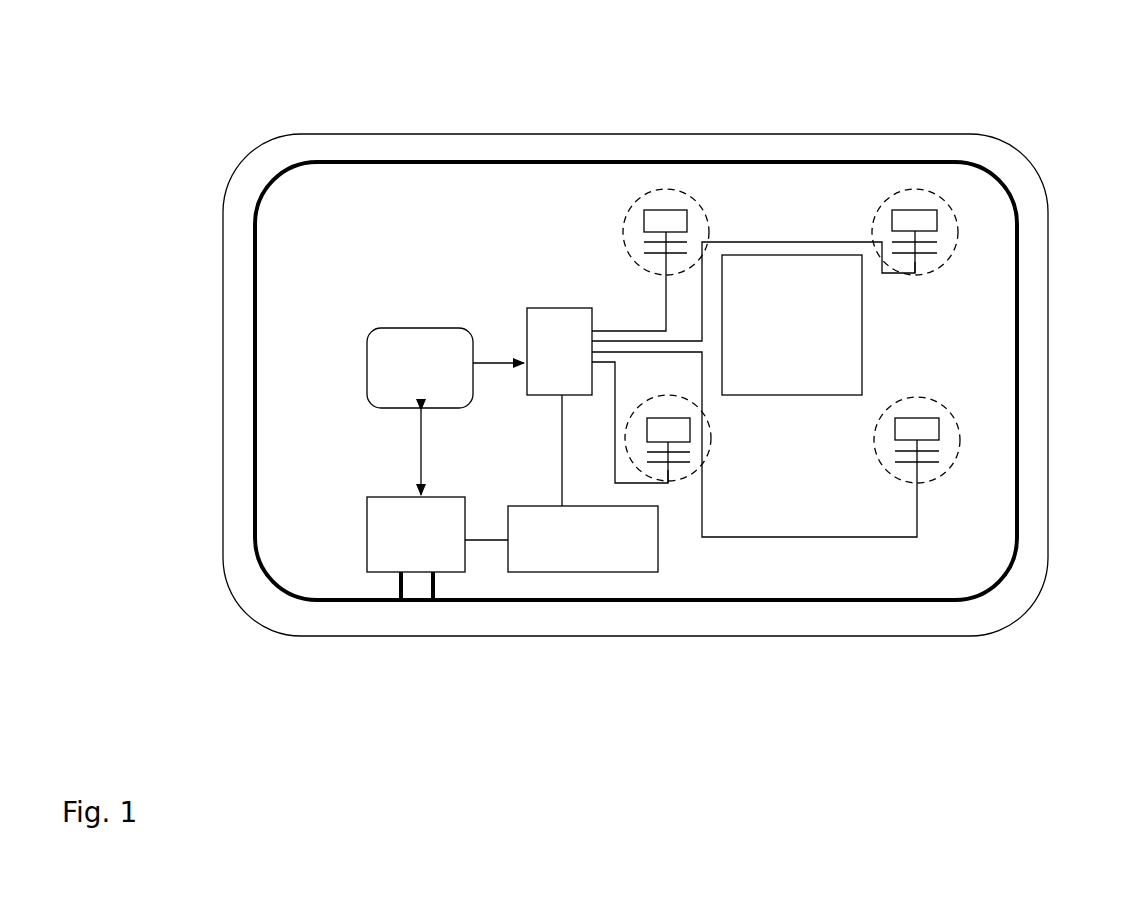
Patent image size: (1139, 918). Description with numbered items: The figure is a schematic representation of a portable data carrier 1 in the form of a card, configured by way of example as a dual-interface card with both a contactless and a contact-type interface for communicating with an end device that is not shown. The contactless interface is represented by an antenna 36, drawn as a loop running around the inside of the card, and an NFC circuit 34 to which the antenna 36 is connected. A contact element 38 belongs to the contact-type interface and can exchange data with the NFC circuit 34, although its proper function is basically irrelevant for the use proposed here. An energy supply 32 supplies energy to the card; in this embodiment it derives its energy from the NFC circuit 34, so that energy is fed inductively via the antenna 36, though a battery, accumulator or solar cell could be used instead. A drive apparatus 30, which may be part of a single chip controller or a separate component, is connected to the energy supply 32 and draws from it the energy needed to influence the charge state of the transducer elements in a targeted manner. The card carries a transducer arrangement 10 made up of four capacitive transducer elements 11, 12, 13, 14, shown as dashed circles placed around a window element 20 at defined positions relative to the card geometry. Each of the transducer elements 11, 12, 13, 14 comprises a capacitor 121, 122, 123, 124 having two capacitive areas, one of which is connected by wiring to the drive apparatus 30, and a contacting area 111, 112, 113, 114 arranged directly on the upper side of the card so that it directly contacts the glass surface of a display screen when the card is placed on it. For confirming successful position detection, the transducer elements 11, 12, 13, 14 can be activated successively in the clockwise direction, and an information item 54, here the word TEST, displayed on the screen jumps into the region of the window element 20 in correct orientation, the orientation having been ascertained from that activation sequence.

The portable data carrier 1 is at (222, 372).
The antenna 36 is at (268, 585).
The drive apparatus 30 is at (535, 308).
The contact element 38 is at (430, 410).
The NFC circuit 34 is at (367, 518).
The energy supply 32 is at (585, 572).
The window element 20 is at (783, 305).
The information item 54 is at (842, 350).
The transducer arrangement 10 is at (712, 232).
The capacitive transducer element 11 is at (634, 169).
The capacitive transducer element 12 is at (995, 182).
The capacitive transducer element 13 is at (996, 501).
The capacitive transducer element 14 is at (705, 566).
The contacting area 111 is at (645, 222).
The contacting area 112 is at (903, 210).
The contacting area 113 is at (939, 430).
The contacting area 114 is at (690, 432).
The capacitor 121 is at (662, 248).
The capacitor 122 is at (925, 245).
The capacitor 123 is at (940, 452).
The capacitor 124 is at (670, 460).